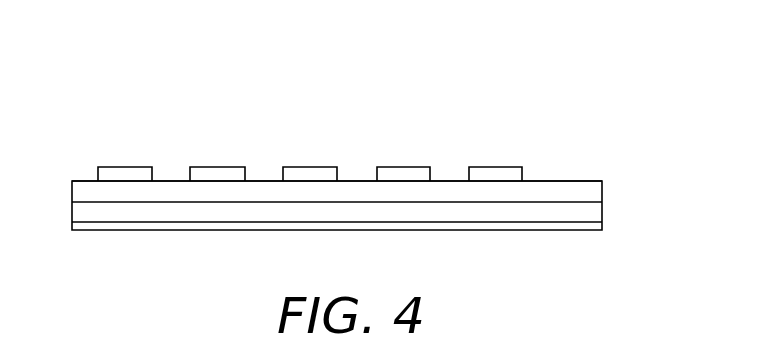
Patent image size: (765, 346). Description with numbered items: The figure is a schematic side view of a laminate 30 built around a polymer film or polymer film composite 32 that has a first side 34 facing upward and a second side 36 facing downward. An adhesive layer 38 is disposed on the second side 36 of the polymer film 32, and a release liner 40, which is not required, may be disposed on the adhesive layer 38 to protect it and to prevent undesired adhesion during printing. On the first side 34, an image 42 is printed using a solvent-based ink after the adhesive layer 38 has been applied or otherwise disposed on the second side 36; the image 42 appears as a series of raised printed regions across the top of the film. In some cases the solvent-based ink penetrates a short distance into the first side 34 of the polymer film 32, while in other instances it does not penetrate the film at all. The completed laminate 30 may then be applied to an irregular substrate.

The laminate 30 is at (139, 81).
The polymer film or polymer film composite 32 is at (591, 192).
The first side 34 is at (566, 181).
The second side 36 is at (573, 203).
The adhesive layer 38 is at (208, 210).
The release liner 40 is at (118, 227).
The image 42 is at (401, 168).